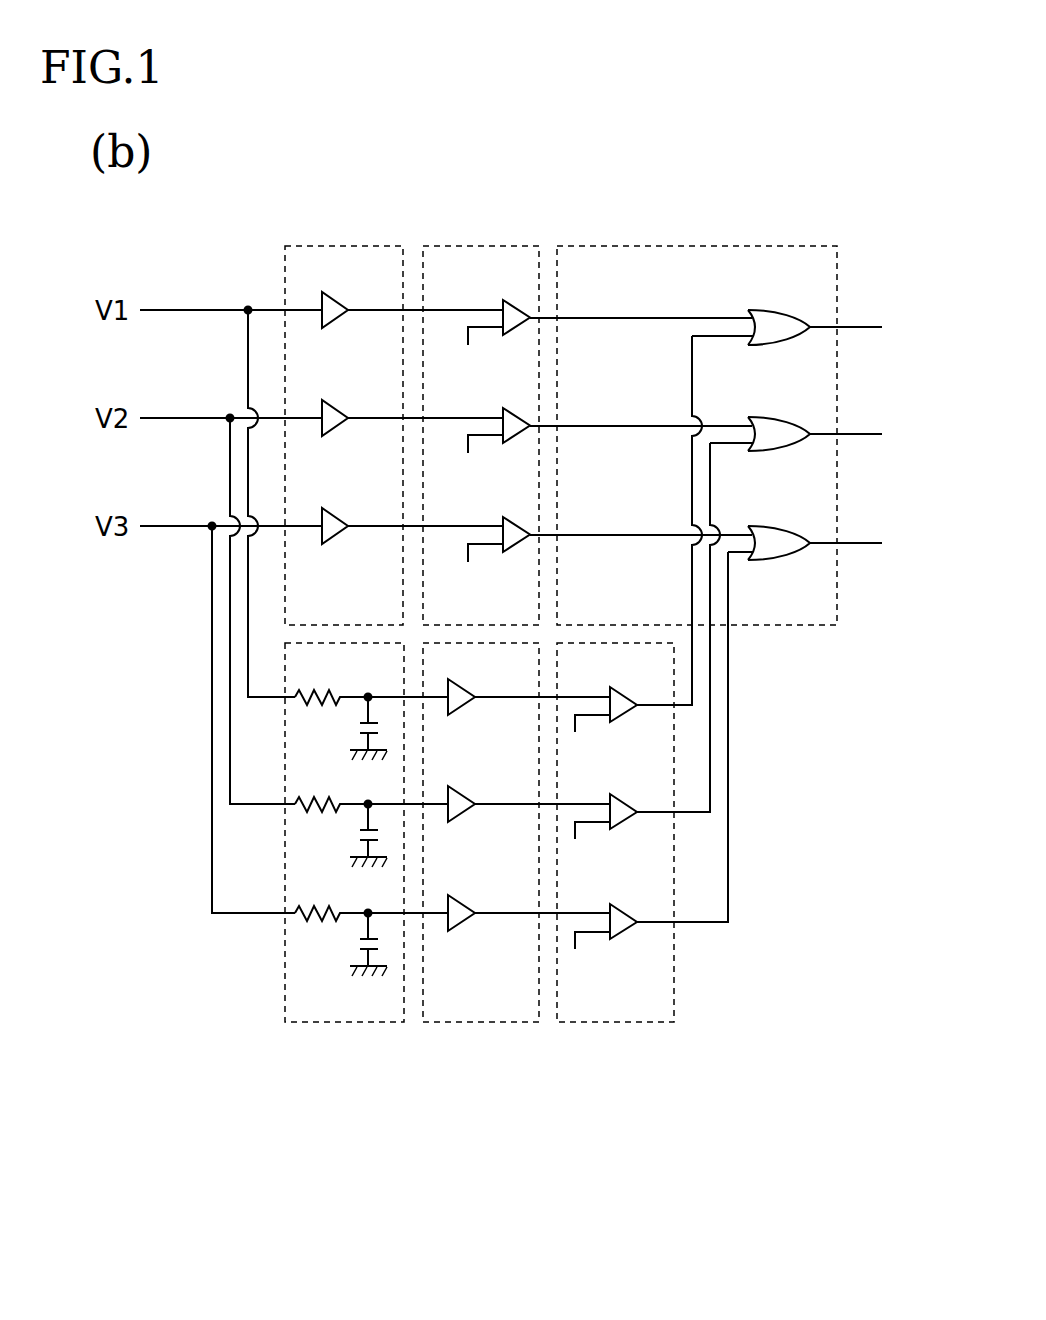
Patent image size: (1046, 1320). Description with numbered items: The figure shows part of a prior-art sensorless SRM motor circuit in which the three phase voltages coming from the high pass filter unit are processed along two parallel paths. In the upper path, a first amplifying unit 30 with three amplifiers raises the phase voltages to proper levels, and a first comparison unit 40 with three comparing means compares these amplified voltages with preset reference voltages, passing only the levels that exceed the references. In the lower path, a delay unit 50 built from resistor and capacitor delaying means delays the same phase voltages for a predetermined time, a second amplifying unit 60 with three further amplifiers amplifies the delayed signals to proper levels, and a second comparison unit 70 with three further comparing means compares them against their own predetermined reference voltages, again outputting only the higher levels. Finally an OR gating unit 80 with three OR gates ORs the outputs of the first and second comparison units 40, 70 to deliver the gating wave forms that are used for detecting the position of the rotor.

The first amplifying unit 30 is at (302, 247).
The first comparison unit 40 is at (435, 247).
The delay unit 50 is at (295, 1022).
The second amplifying unit 60 is at (430, 1022).
The second comparison unit 70 is at (563, 1022).
The OR gating unit 80 is at (570, 247).